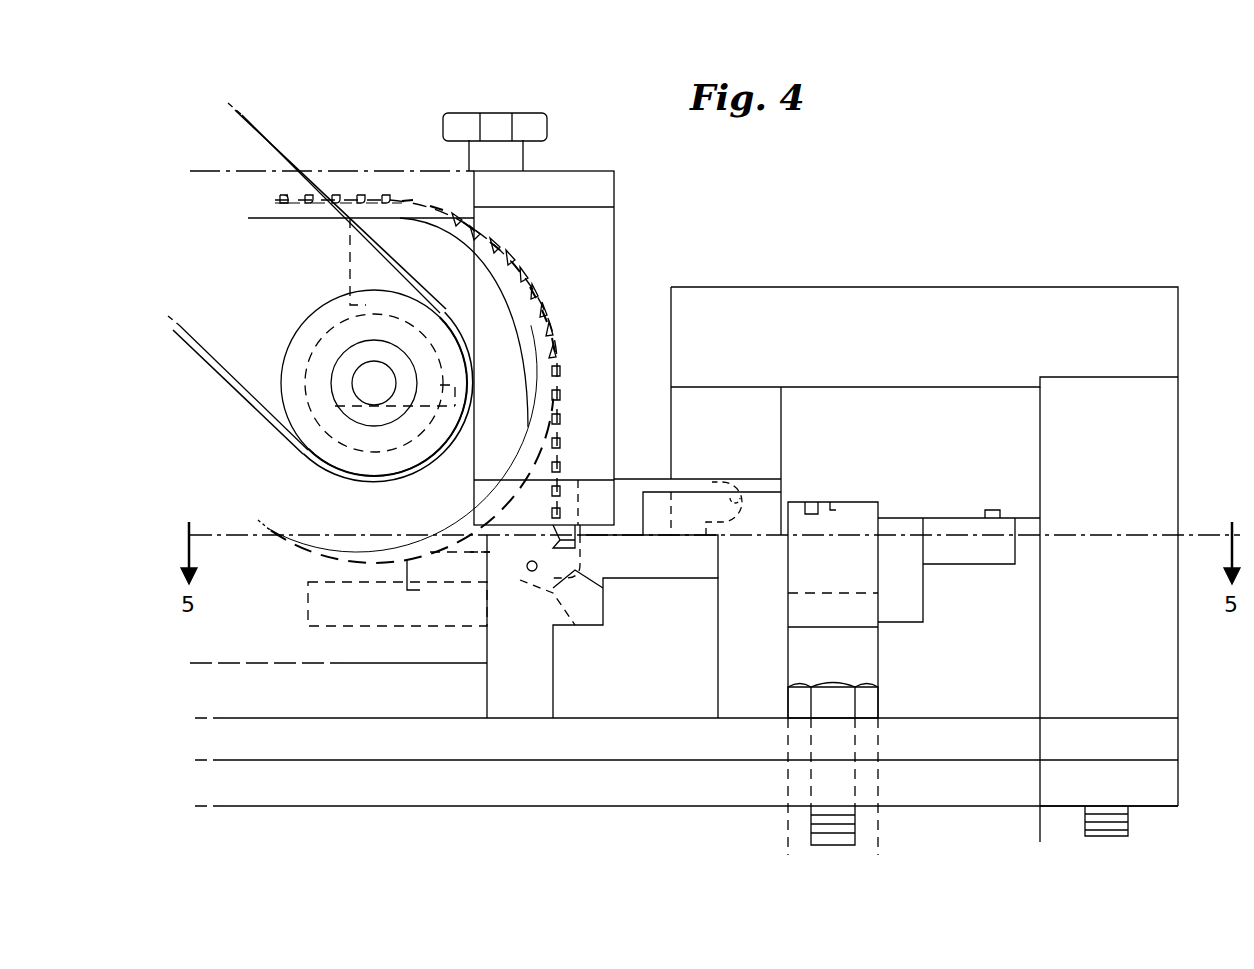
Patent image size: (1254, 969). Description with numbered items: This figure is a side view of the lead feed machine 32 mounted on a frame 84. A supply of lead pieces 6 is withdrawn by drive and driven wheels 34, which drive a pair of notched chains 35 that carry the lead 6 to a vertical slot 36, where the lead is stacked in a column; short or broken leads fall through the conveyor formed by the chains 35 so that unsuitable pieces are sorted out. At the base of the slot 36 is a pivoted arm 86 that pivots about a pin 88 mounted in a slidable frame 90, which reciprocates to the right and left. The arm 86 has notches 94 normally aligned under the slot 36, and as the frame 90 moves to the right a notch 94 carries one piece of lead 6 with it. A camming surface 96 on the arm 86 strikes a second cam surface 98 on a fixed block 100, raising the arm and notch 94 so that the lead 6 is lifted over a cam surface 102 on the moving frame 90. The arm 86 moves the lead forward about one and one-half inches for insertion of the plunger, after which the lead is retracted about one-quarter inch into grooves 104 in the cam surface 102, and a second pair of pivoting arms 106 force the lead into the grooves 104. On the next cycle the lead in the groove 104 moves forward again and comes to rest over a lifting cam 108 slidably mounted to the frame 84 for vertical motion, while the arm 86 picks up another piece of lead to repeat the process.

The lead pieces 6 is at (458, 214).
The lead feed machine 32 is at (640, 246).
The drive and driven wheels 34 is at (396, 218).
The notched chains 35 is at (292, 190).
The vertical slot 36 is at (532, 332).
The frame 84 is at (1170, 730).
The pivoted arm 86 is at (428, 588).
The pin 88 is at (531, 572).
The slidable frame 90 is at (503, 685).
The notches 94 is at (553, 525).
The camming surface 96 is at (556, 600).
The second cam surface 98 is at (603, 584).
The fixed block 100 is at (634, 626).
The cam surface 102 is at (648, 535).
The grooves 104 is at (668, 533).
The second pair of pivoting arms 106 is at (651, 478).
The lifting cam 108 is at (864, 614).